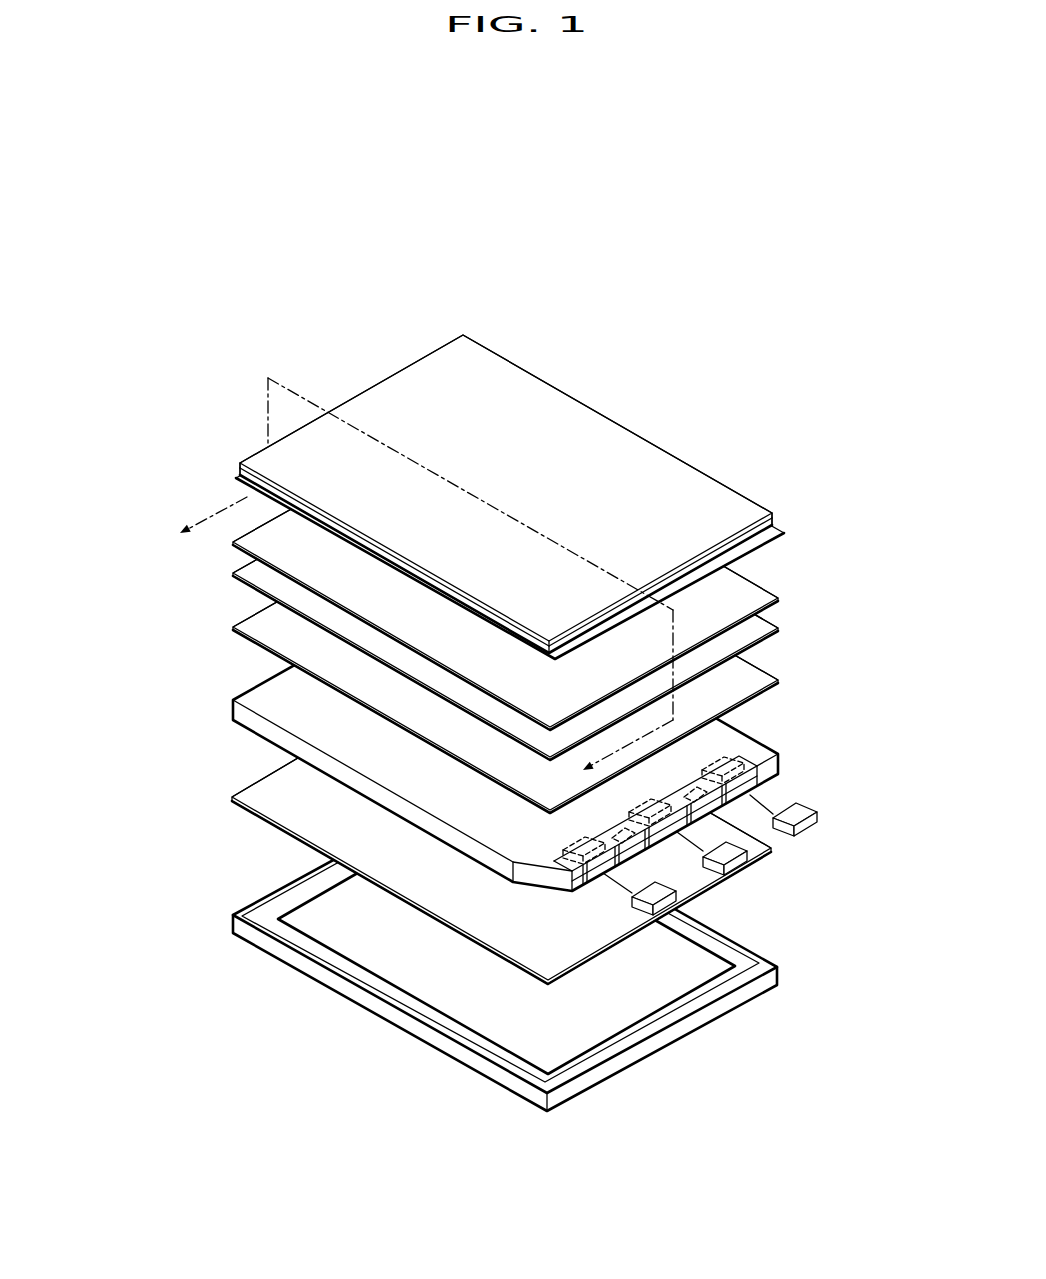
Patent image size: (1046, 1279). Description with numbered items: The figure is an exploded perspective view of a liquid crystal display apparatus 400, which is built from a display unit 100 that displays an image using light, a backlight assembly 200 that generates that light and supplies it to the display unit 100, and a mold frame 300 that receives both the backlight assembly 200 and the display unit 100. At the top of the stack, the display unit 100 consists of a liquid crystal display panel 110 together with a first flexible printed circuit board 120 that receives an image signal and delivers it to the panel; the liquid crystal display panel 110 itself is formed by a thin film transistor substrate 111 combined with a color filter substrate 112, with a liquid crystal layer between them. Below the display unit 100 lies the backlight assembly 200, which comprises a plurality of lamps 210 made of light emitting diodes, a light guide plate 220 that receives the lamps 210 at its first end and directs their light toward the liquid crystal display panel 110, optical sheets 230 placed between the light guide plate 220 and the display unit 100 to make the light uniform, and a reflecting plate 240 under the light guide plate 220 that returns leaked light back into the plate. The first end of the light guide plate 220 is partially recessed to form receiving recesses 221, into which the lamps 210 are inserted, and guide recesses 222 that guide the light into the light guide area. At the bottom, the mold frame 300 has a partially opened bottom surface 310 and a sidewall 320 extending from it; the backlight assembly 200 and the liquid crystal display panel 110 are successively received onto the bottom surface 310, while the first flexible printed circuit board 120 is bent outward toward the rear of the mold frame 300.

The display unit 100 is at (481, 497).
The liquid crystal display panel 110 is at (422, 494).
The thin film transistor substrate 111 is at (237, 471).
The color filter substrate 112 is at (247, 459).
The first flexible printed circuit board 120 is at (785, 533).
The backlight assembly 200 is at (474, 698).
The lamps 210 is at (800, 812).
The light guide plate 220 is at (493, 731).
The receiving recesses 221 is at (744, 756).
The guide recesses 222 is at (707, 820).
The optical sheets 230 is at (471, 613).
The reflecting plate 240 is at (697, 886).
The mold frame 300 is at (571, 972).
The bottom surface 310 is at (590, 1051).
The sidewall 320 is at (676, 1029).
The liquid crystal display apparatus 400 is at (684, 280).